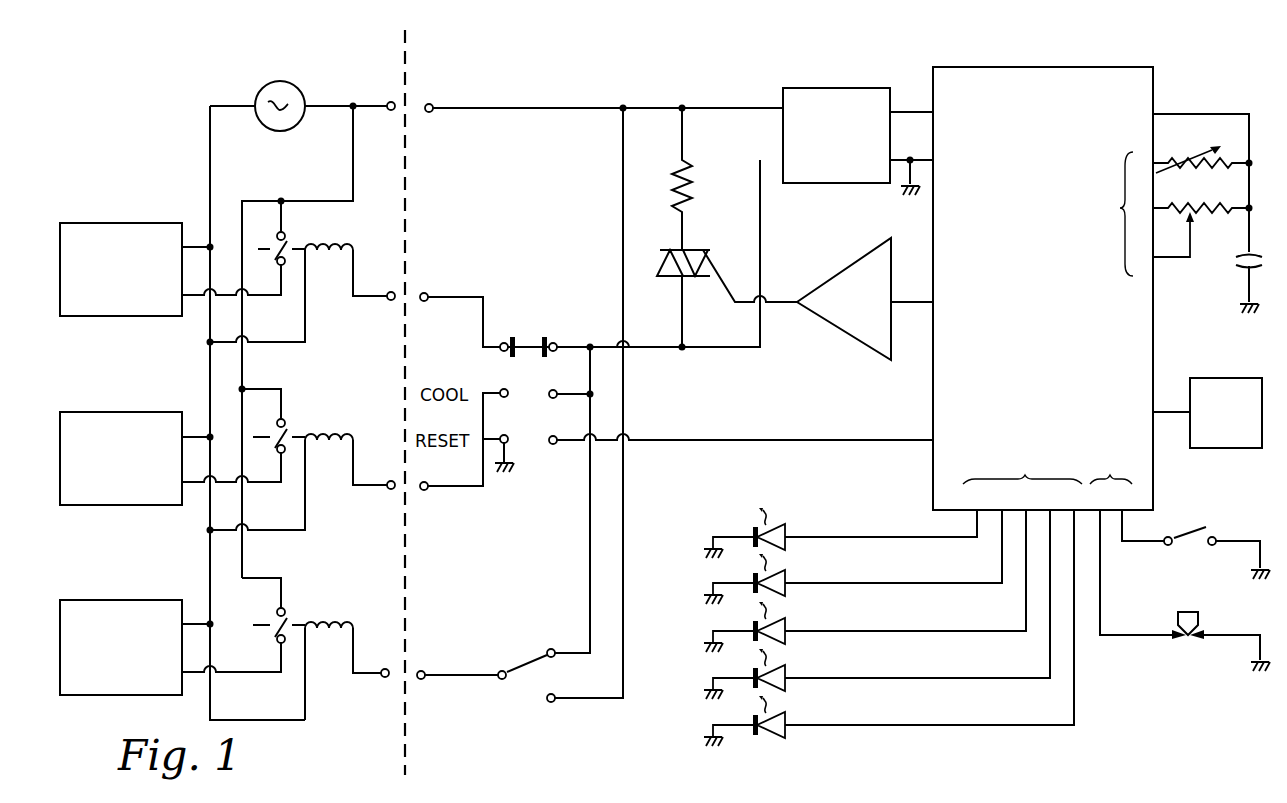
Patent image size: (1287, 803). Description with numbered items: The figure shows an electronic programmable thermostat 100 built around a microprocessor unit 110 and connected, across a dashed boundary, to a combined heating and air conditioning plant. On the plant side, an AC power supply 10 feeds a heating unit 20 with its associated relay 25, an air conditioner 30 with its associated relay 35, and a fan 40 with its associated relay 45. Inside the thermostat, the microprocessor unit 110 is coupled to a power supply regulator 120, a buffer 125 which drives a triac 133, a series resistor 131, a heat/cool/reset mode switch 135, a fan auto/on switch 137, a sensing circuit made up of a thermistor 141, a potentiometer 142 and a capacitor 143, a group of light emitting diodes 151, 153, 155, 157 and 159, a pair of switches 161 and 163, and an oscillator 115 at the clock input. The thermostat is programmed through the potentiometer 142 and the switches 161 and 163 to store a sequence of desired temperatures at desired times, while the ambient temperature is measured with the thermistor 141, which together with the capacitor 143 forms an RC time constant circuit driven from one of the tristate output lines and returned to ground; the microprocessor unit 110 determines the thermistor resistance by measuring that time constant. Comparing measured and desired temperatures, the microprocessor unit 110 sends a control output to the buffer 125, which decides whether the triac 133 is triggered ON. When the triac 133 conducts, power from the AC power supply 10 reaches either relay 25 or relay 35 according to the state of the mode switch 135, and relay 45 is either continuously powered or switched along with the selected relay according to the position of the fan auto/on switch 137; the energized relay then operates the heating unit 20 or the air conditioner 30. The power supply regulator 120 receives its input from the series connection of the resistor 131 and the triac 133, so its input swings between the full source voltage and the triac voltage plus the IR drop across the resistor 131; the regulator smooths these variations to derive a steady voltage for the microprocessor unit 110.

The AC power supply 10 is at (265, 84).
The heating unit 20 is at (116, 223).
The relay 25 is at (324, 244).
The air conditioner 30 is at (114, 412).
The relay 35 is at (322, 438).
The fan 40 is at (116, 600).
The relay 45 is at (320, 628).
The electronic programmable thermostat 100 is at (593, 85).
The microprocessor unit 110 is at (992, 67).
The oscillator 115 is at (1216, 355).
The power supply regulator 120 is at (842, 88).
The buffer 125 is at (842, 270).
The series resistor 131 is at (750, 142).
The triac 133 is at (690, 250).
The heat/cool/reset mode switch 135 is at (575, 300).
The fan auto/on switch 137 is at (522, 668).
The thermistor 141 is at (1196, 132).
The potentiometer 142 is at (1200, 185).
The capacitor 143 is at (1240, 266).
The light emitting diode 151 is at (784, 523).
The light emitting diode 153 is at (784, 571).
The light emitting diode 155 is at (784, 619).
The light emitting diode 157 is at (784, 666).
The light emitting diode 159 is at (784, 713).
The switch 161 is at (1172, 612).
The switch 163 is at (1238, 514).